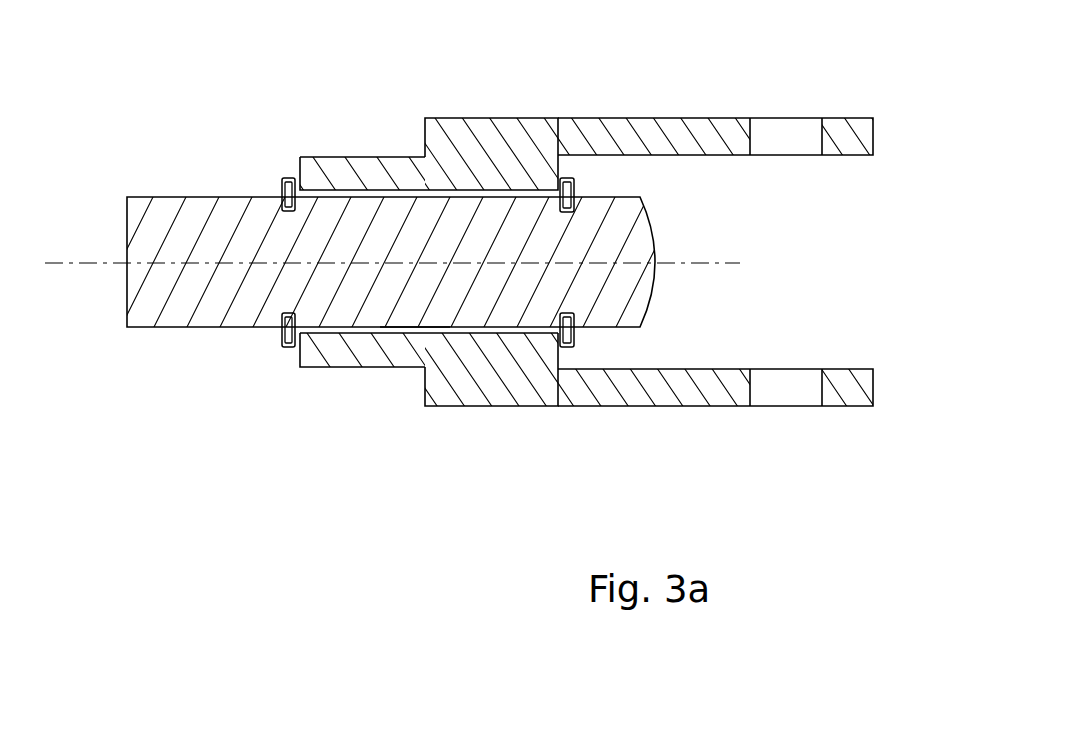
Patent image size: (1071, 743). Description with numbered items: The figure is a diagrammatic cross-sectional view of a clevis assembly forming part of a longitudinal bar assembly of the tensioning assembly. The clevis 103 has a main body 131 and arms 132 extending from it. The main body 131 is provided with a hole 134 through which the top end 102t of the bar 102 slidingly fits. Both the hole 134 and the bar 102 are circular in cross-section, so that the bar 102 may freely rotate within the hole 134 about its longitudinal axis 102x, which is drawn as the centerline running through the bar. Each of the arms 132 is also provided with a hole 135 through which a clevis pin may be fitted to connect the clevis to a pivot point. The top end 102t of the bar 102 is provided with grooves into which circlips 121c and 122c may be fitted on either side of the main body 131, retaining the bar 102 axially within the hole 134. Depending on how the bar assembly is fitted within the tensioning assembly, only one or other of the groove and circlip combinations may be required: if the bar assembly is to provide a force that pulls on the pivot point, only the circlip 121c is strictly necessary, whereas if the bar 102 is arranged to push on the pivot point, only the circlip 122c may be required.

The bar 102 is at (232, 197).
The longitudinal axis 102x is at (433, 266).
The top end of bar 102t is at (396, 310).
The clevis 103 is at (310, 420).
The circlip 121c is at (570, 335).
The circlip 122c is at (281, 338).
The main body 131 is at (393, 158).
The arms 132 is at (853, 157).
The hole 134 is at (506, 190).
The hole 135 is at (823, 118).